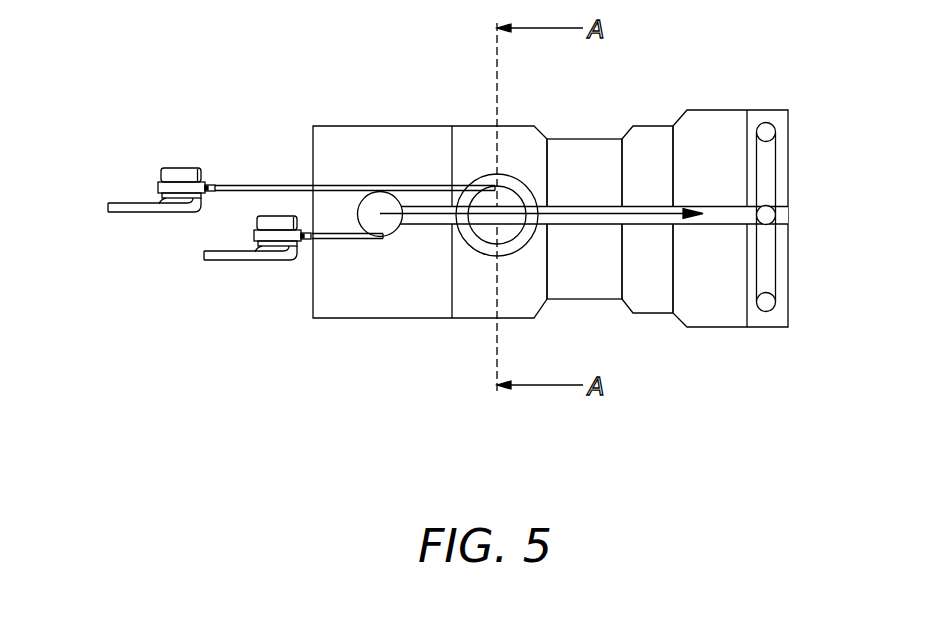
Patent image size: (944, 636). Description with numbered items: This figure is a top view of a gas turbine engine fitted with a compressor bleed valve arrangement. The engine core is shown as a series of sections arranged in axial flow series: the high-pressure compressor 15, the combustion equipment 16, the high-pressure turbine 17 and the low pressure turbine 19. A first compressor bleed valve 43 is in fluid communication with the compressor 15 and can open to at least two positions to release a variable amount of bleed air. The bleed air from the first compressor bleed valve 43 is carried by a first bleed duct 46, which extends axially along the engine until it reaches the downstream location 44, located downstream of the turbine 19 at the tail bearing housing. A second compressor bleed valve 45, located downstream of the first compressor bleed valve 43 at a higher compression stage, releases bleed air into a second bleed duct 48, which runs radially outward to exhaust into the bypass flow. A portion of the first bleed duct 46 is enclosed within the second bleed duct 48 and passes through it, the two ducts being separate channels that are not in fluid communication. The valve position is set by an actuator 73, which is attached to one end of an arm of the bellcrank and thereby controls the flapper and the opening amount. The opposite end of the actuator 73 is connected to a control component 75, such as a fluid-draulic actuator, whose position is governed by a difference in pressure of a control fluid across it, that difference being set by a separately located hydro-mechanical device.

The high-pressure compressor 15 is at (465, 295).
The combustion equipment 16 is at (582, 172).
The high-pressure turbine 17 is at (647, 153).
The low pressure turbine 19 is at (730, 122).
The first compressor bleed valve 43 is at (378, 203).
The downstream location 44 is at (777, 315).
The second compressor bleed valve 45 is at (485, 233).
The first bleed duct 46 is at (717, 218).
The second bleed duct 48 is at (510, 248).
The actuator 73 is at (232, 196).
The control component 75 is at (280, 205).